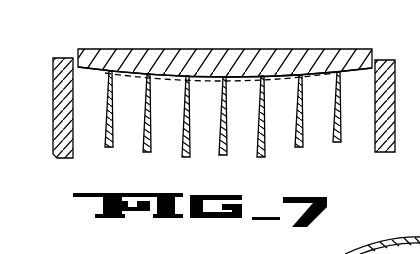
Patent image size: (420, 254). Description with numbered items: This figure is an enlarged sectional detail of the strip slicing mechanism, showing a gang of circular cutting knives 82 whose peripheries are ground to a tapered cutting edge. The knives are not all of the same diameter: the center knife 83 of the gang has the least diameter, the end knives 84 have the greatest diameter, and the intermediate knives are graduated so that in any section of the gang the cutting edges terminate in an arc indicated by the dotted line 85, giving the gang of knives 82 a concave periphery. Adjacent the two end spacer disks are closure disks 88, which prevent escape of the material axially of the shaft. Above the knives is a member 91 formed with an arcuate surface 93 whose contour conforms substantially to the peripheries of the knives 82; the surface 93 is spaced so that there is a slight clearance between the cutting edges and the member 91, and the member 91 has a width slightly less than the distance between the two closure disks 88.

The member 91 is at (222, 63).
The arcuate surface 93 is at (143, 72).
The dotted line 85 is at (114, 71).
The closure disks 88 is at (59, 90).
The end knives 84 is at (106, 126).
The center knife 83 is at (225, 120).
The circular cutting knives 82 is at (203, 144).